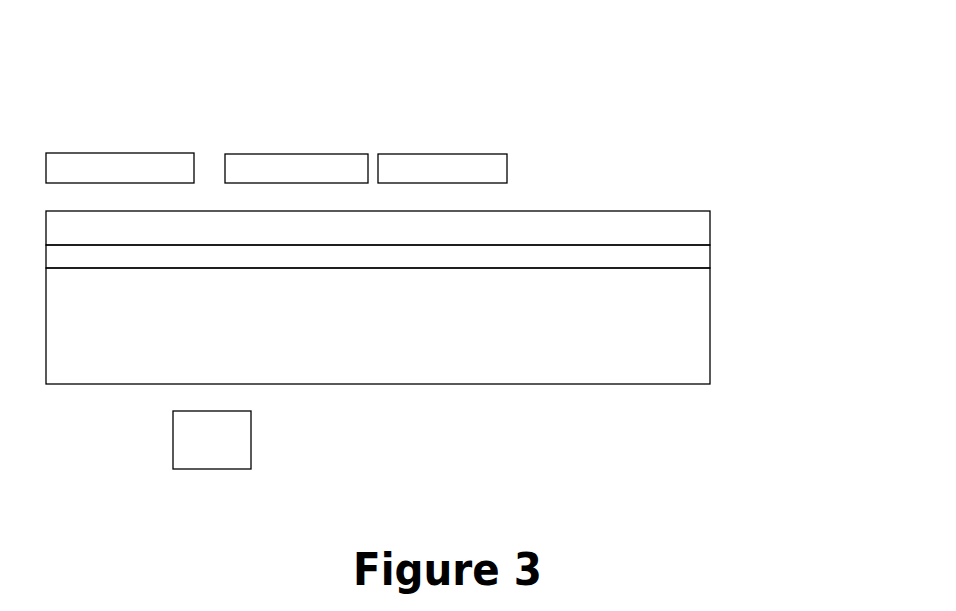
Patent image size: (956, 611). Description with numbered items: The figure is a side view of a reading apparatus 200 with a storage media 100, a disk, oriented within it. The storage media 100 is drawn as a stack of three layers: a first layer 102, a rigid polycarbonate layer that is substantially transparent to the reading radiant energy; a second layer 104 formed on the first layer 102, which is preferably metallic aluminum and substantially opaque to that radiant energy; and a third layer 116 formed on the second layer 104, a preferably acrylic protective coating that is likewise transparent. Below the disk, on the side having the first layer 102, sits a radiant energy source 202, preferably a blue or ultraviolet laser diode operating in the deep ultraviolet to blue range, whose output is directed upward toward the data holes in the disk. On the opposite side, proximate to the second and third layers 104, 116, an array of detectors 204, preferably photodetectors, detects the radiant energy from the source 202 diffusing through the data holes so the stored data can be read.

The apparatus 200 is at (432, 278).
The storage media 100 is at (432, 259).
The third layer 116 is at (693, 229).
The second layer 104 is at (693, 257).
The first layer 102 is at (683, 344).
The detectors 204 is at (97, 164).
The radiant energy source 202 is at (209, 446).